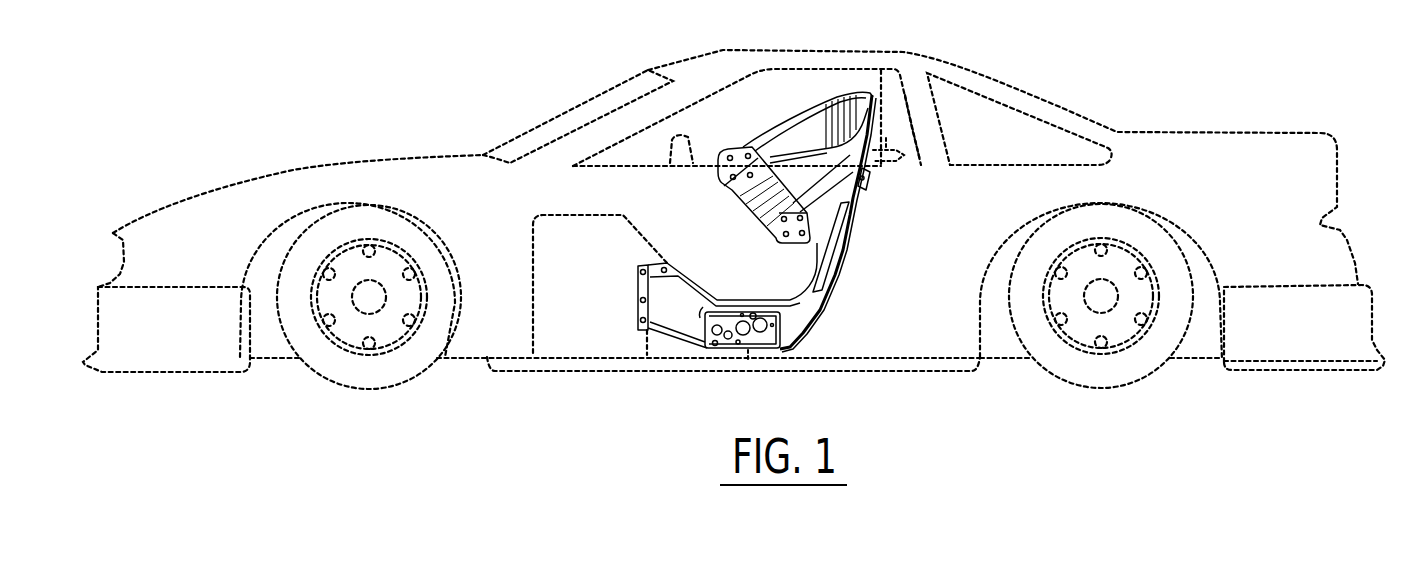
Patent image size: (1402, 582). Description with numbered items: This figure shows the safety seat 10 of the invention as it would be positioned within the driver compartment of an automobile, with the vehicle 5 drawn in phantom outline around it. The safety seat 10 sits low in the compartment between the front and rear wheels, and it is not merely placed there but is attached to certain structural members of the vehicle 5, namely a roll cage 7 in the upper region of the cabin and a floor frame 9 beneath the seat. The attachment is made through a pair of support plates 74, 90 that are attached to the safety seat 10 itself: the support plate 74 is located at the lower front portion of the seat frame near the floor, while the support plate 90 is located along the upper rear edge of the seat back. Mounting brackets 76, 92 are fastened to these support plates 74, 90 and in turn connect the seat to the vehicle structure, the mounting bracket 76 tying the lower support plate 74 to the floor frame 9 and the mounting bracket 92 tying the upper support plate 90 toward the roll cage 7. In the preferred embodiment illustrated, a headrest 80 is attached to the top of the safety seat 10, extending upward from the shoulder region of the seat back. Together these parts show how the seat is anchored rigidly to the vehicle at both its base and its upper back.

The vehicle 5 is at (1038, 90).
The roll cage 7 is at (912, 128).
The floor frame 9 is at (708, 355).
The safety seat 10 is at (791, 231).
The support plate 74 is at (790, 318).
The mounting bracket 76 is at (748, 362).
The headrest 80 is at (857, 90).
The support plate 90 is at (868, 170).
The mounting bracket 92 is at (886, 160).